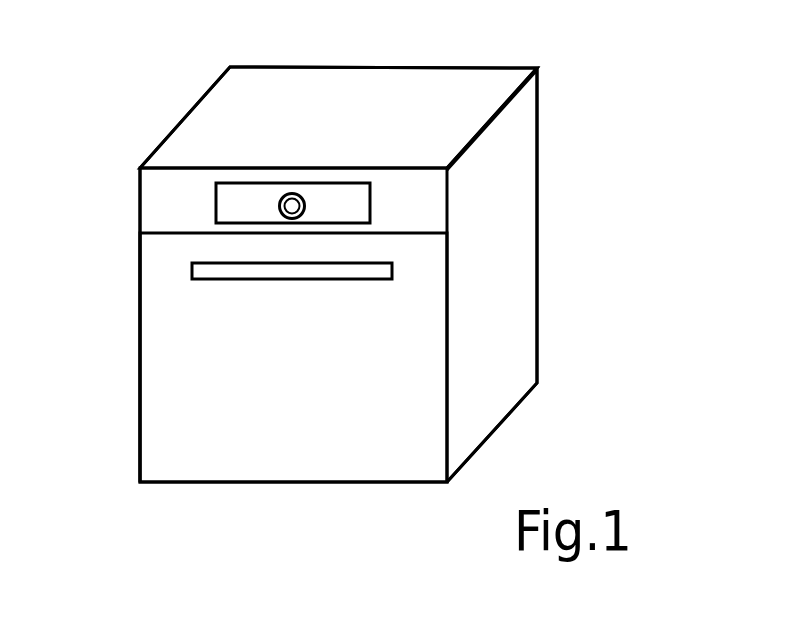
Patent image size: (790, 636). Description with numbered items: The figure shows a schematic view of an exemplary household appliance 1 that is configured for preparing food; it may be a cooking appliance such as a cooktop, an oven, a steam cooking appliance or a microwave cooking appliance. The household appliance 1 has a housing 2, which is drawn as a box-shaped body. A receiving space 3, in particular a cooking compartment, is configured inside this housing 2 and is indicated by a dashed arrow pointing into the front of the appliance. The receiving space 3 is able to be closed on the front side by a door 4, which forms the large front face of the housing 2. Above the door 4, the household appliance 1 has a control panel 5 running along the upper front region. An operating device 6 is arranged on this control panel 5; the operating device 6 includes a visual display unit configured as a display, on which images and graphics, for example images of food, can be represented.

The household appliance 1 is at (565, 118).
The housing 2 is at (517, 245).
The receiving space 3 is at (368, 358).
The door 4 is at (148, 388).
The control panel 5 is at (413, 182).
The operating device 6 is at (308, 183).